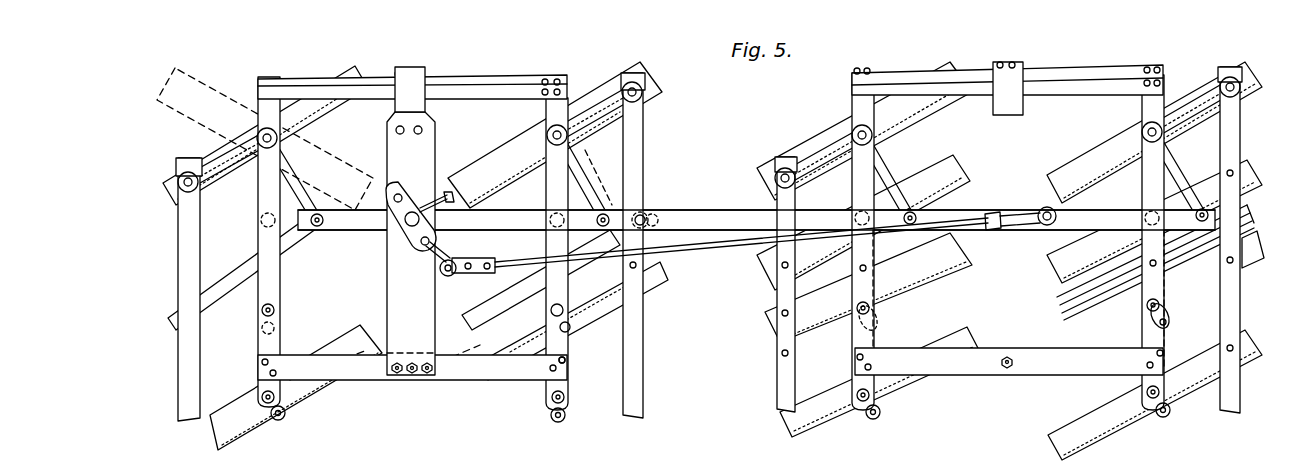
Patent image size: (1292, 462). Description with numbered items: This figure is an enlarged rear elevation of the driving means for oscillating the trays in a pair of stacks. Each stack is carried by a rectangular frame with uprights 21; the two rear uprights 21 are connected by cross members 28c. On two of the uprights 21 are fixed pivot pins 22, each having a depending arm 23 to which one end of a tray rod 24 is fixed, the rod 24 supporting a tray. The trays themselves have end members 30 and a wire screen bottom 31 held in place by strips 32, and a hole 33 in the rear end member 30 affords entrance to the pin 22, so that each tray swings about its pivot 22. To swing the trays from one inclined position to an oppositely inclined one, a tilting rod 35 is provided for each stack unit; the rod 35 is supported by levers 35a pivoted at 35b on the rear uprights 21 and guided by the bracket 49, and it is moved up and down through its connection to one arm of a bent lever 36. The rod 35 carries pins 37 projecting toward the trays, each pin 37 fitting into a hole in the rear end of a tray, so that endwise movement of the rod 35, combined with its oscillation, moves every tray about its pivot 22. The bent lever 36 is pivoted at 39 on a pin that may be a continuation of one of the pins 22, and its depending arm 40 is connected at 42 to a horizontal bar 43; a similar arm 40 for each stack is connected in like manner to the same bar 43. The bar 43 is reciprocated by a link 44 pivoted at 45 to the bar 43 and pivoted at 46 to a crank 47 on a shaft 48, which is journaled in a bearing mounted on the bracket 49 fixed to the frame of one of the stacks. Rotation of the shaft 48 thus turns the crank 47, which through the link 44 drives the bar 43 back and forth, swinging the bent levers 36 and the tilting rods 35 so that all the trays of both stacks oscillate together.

The uprights 21 is at (709, 235).
The pivot pins 22 is at (1183, 346).
The depending arm 23 is at (712, 380).
The tray rod 24 is at (714, 428).
The cross members 28c is at (710, 230).
The end members 30 is at (693, 261).
The wire screen bottom 31 is at (1055, 203).
The strips 32 is at (232, 272).
The hole 33 is at (183, 444).
The tilting rod 35 is at (717, 258).
The levers 35a is at (1137, 279).
The pivot 35b is at (1135, 262).
The bent lever 36 is at (698, 111).
The pins 37 is at (1247, 377).
The pivot 39 is at (717, 166).
The depending arm 40 is at (738, 176).
The connection 42 is at (793, 212).
The horizontal bar 43 is at (756, 205).
The link 44 is at (741, 250).
The pivot 45 is at (1020, 233).
The pivot 46 is at (456, 281).
The crank 47 is at (457, 232).
The shaft 48 is at (391, 241).
The bracket 49 is at (705, 218).